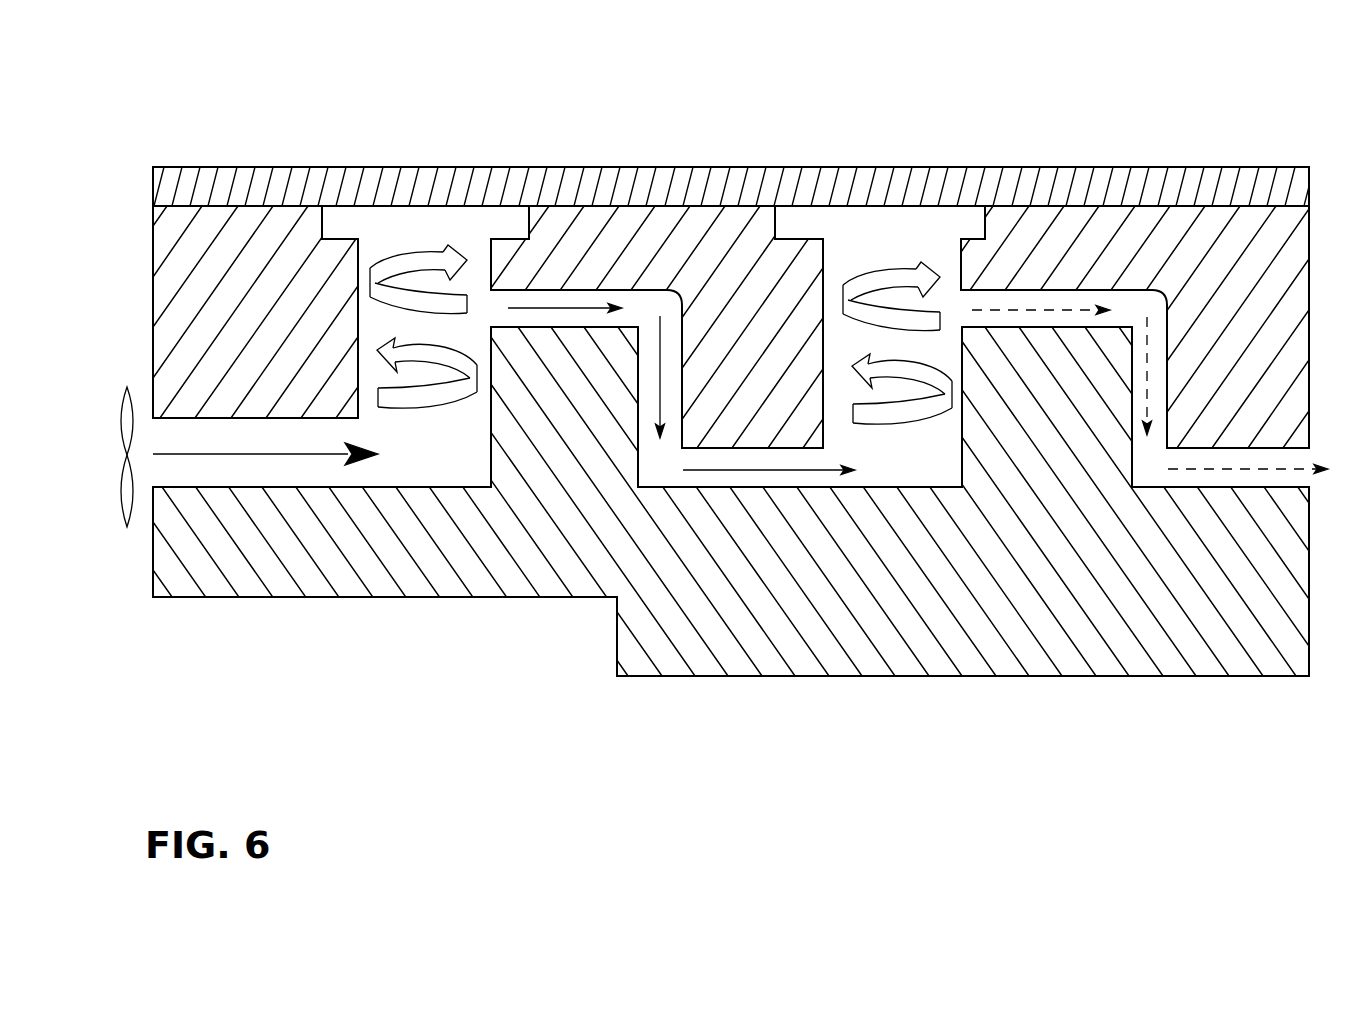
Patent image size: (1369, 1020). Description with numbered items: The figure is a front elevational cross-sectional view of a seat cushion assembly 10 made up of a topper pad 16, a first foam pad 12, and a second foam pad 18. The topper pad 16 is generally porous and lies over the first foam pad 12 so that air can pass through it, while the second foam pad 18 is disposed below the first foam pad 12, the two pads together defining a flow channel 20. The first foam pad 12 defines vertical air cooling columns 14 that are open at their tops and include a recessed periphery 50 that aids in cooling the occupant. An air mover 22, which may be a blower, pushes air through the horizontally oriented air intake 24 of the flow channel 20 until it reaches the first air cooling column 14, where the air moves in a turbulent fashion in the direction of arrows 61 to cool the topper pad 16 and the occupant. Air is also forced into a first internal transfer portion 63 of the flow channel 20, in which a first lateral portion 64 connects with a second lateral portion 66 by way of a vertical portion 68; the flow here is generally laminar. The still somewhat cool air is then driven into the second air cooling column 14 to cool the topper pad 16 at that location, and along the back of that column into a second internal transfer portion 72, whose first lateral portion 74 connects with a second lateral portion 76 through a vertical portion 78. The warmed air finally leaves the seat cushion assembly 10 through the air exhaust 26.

The seat cushion assembly 10 is at (1180, 113).
The first foam pad 12 is at (1290, 297).
The air cooling column 14 is at (417, 225).
The topper pad 16 is at (1020, 193).
The second foam pad 18 is at (1112, 628).
The flow channel 20 is at (655, 455).
The air mover 22 is at (127, 527).
The air intake 24 is at (179, 438).
The air exhaust 26 is at (1283, 458).
The recessed periphery 50 is at (328, 227).
The arrows 61 is at (383, 355).
The first internal transfer portion 63 is at (672, 360).
The first lateral portion 64 is at (585, 305).
The second lateral portion 66 is at (755, 480).
The vertical portion 68 is at (652, 400).
The second internal transfer portion 72 is at (1103, 290).
The first lateral portion 74 is at (1068, 333).
The second lateral portion 76 is at (1243, 490).
The vertical portion 78 is at (1168, 356).